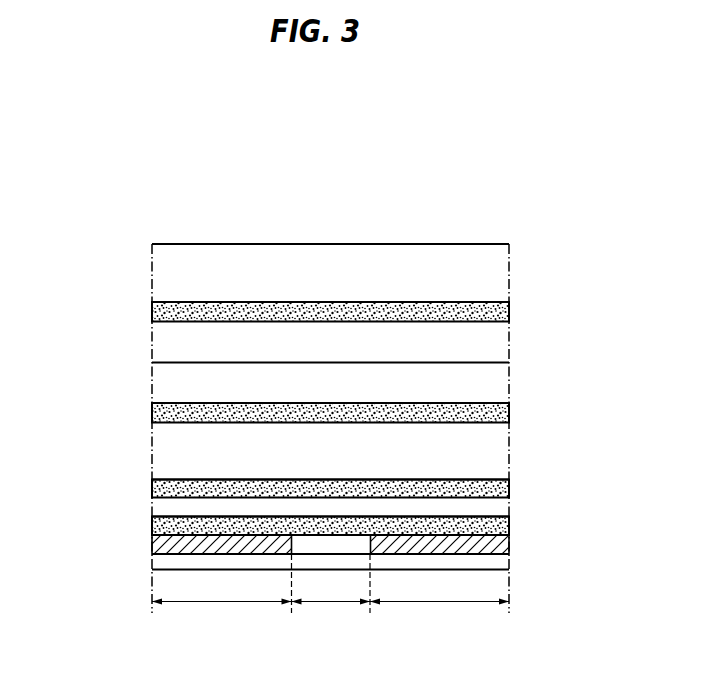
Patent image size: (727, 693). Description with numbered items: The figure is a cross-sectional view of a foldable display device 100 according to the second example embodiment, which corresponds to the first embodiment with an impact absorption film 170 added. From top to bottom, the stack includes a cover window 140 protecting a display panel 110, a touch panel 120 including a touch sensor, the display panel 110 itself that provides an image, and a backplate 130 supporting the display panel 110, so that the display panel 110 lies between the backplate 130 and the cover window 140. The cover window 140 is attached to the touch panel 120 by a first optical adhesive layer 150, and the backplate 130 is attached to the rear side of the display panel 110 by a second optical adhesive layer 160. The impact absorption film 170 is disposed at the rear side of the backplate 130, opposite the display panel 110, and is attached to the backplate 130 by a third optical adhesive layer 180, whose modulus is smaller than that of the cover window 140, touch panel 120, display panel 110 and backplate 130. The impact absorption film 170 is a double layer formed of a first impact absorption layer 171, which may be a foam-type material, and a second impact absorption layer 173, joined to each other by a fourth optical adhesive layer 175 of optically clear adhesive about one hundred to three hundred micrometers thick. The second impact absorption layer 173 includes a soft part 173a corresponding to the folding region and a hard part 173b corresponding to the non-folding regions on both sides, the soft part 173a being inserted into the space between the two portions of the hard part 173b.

The foldable display device 100 is at (489, 214).
The display panel 110 is at (497, 382).
The touch panel 120 is at (497, 337).
The backplate 130 is at (497, 448).
The cover window 140 is at (497, 272).
The first optical adhesive layer 150 is at (162, 308).
The second optical adhesive layer 160 is at (162, 410).
The impact absorption film 170 is at (510, 498).
The first impact absorption layer 171 is at (165, 506).
The second impact absorption layer 173 is at (612, 578).
The soft part 173a is at (488, 566).
The hard part 173b is at (488, 546).
The fourth optical adhesive layer 175 is at (165, 528).
The third optical adhesive layer 180 is at (160, 485).